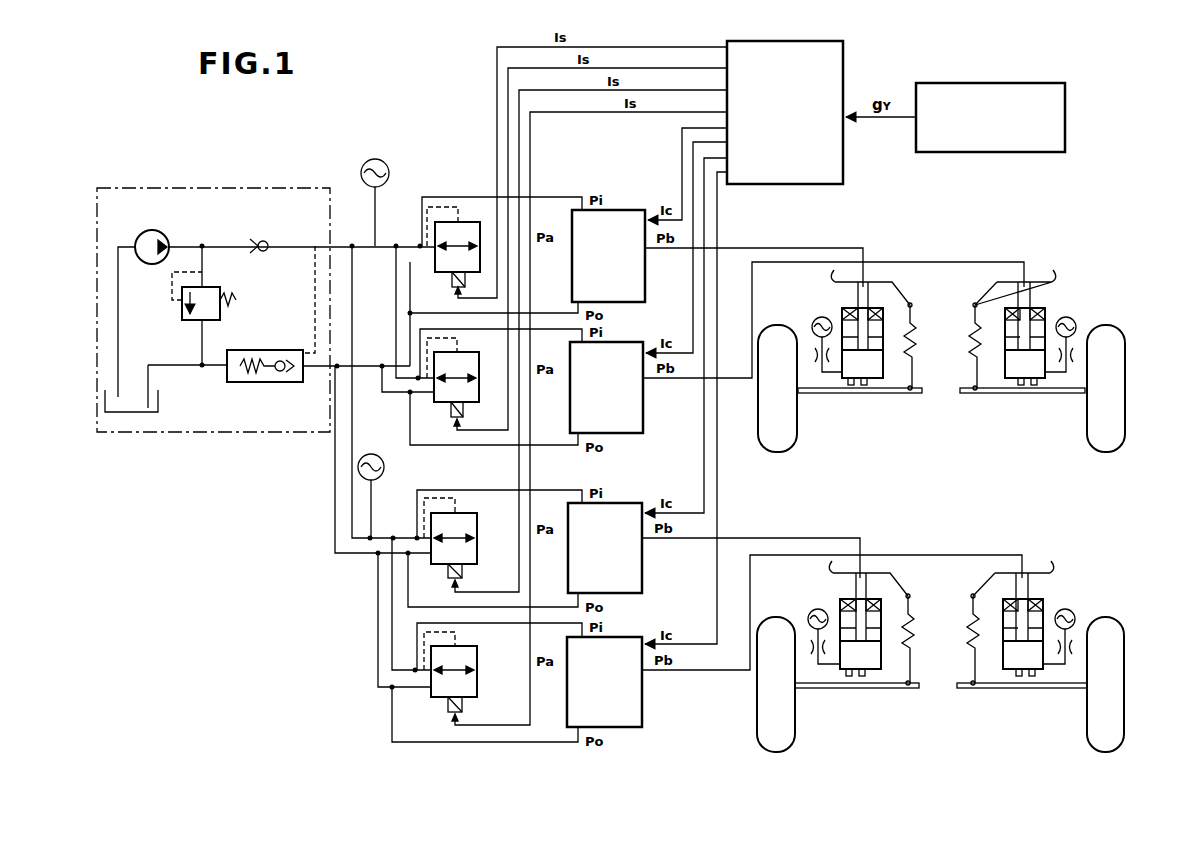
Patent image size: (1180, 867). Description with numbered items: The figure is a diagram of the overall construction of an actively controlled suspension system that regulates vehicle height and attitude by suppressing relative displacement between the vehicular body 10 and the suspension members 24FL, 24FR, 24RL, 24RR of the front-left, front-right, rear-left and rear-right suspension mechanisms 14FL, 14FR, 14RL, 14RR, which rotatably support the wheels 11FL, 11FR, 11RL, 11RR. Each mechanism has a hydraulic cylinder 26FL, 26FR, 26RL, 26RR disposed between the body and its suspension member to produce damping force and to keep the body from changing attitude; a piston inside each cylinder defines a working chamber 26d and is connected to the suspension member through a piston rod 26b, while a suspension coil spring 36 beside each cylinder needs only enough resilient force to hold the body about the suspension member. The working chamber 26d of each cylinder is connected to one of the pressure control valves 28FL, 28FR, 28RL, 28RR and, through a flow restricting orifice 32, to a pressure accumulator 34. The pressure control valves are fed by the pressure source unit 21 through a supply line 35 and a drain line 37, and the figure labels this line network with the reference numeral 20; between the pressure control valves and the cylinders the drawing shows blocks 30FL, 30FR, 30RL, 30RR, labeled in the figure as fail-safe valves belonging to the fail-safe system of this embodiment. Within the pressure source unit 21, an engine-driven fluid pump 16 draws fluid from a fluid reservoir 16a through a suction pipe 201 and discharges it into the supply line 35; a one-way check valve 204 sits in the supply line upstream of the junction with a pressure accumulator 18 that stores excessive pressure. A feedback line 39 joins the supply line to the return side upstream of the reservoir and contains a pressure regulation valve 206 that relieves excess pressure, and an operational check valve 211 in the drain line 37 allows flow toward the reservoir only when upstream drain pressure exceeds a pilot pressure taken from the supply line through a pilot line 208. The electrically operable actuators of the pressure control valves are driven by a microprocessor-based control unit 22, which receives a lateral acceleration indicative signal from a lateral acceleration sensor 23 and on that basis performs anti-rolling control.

The vehicular body 10 is at (1050, 292).
The front-left wheel 11FL is at (798, 440).
The front-right wheel 11FR is at (1090, 440).
The rear-left wheel 11RL is at (796, 738).
The rear-right wheel 11RR is at (1084, 742).
The front-left suspension mechanism 14FL is at (826, 311).
The front-right suspension mechanism 14FR is at (1062, 301).
The rear-left suspension mechanism 14RL is at (828, 600).
The rear-right suspension mechanism 14RR is at (1052, 597).
The fluid pump 16 is at (163, 233).
The fluid reservoir 16a is at (158, 400).
The pressure accumulator 18 is at (385, 163).
The hydraulic circuit 20 is at (332, 584).
The pressure source unit 21 is at (225, 434).
The control unit 22 is at (843, 63).
The lateral acceleration sensor 23 is at (1000, 83).
The front-left suspension member 24FL is at (882, 393).
The front-right suspension member 24FR is at (1002, 393).
The rear-left suspension member 24RL is at (880, 688).
The rear-right suspension member 24RR is at (1005, 688).
The front-left hydraulic cylinder 26FL is at (850, 386).
The front-right hydraulic cylinder 26FR is at (1040, 386).
The rear-left hydraulic cylinder 26RL is at (848, 678).
The rear-right hydraulic cylinder 26RR is at (1032, 678).
The piston rod 26b is at (880, 285).
The working chamber 26d is at (872, 362).
The front-left pressure control valve 28FL is at (472, 222).
The front-right pressure control valve 28FR is at (440, 404).
The rear-left pressure control valve 28RL is at (470, 514).
The rear-right pressure control valve 28RR is at (437, 700).
The front left fail-safe valve 30FL is at (620, 210).
The front right fail-safe valve 30FR is at (630, 342).
The rear left fail-safe valve 30RL is at (623, 503).
The rear right fail-safe valve 30RR is at (625, 637).
The orifice 32 is at (835, 362).
The pressure accumulator 34 is at (812, 322).
The supply line 35 is at (392, 243).
The suspension coil spring 36 is at (930, 312).
The drain line 37 is at (364, 362).
The feedback line 39 is at (202, 332).
The suction pipe 201 is at (118, 335).
The one-way check valve 204 is at (262, 240).
The pressure regulation valve 206 is at (216, 287).
The pilot line 208 is at (254, 300).
The operational check valve 211 is at (272, 382).